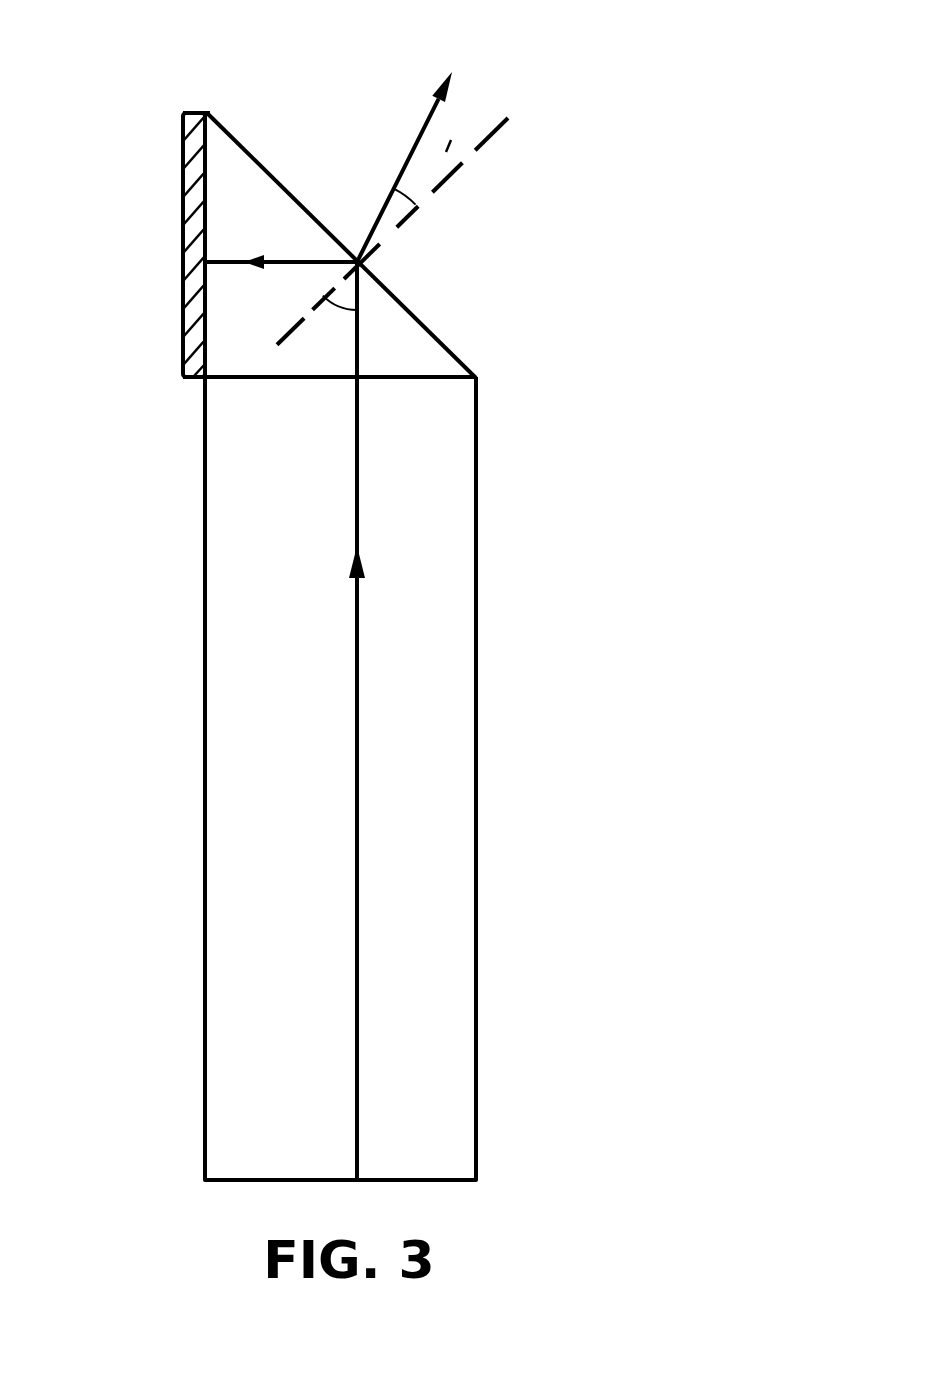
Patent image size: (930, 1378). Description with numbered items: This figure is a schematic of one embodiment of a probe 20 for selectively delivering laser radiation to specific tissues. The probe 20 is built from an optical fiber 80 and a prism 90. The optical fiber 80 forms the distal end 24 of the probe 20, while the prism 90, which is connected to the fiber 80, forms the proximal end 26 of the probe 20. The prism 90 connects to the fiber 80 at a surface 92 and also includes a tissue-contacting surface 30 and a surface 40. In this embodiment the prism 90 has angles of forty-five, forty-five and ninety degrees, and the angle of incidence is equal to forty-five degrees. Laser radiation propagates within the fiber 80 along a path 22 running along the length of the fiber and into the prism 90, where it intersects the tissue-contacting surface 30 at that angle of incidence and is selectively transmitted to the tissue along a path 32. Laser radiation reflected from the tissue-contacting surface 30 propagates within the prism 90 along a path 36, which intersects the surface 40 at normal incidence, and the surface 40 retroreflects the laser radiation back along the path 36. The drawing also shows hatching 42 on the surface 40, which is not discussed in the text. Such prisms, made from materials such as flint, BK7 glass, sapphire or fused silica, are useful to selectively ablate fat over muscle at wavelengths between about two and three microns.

The probe 20 is at (604, 882).
The path 22 is at (360, 897).
The distal end 24 is at (262, 1158).
The proximal end 26 is at (237, 322).
The tissue-contacting surface 30 is at (432, 333).
The path 32 is at (412, 148).
The path 36 is at (288, 260).
The surface 40 is at (185, 302).
The reflective coating 42 is at (183, 168).
The optical fiber 80 is at (447, 700).
The prism 90 is at (240, 172).
The surface 92 is at (425, 380).